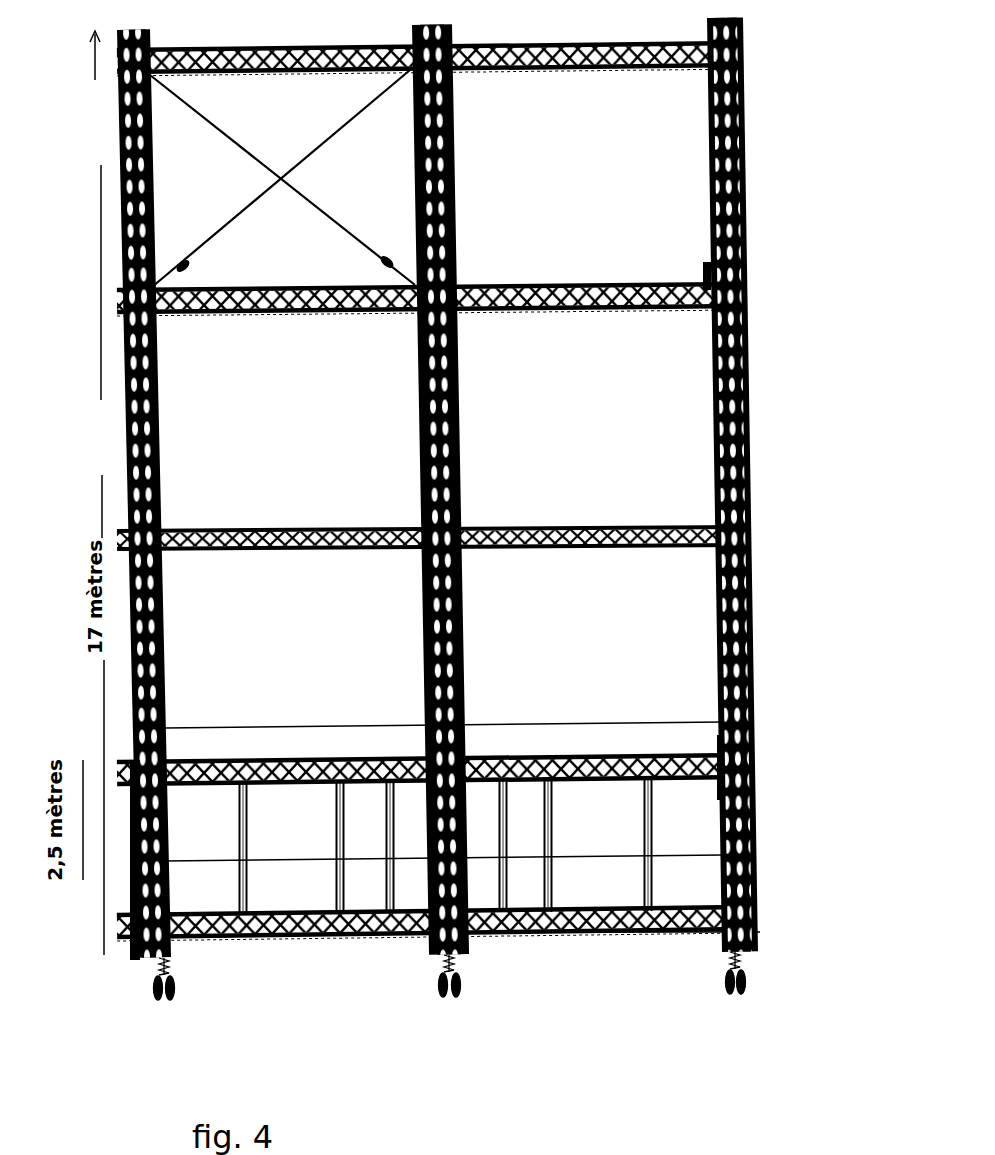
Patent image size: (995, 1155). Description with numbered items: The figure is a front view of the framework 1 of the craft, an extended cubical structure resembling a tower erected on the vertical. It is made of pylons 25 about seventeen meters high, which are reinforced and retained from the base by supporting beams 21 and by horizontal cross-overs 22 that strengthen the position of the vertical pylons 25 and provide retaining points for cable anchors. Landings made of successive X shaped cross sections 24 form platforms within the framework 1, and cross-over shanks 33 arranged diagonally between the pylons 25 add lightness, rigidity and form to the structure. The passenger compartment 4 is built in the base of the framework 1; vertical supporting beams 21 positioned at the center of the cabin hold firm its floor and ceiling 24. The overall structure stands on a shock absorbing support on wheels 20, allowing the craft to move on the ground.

The framework 1 is at (460, 527).
The passenger compartment 4 is at (578, 832).
The wheels 20 is at (432, 962).
The supporting beams 21 is at (500, 838).
The horizontal cross-overs 22 is at (486, 54).
The X shaped cross sections 24 is at (687, 905).
The pylons 25 is at (128, 432).
The cross-over shanks 33 is at (227, 228).